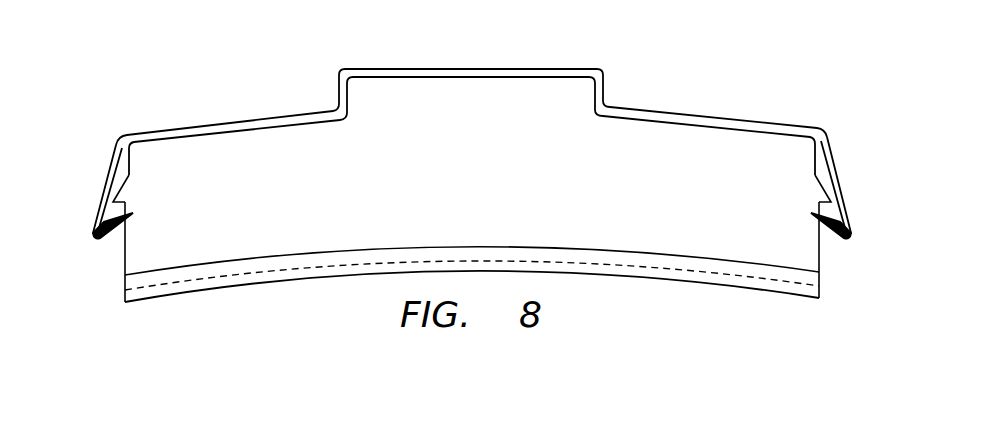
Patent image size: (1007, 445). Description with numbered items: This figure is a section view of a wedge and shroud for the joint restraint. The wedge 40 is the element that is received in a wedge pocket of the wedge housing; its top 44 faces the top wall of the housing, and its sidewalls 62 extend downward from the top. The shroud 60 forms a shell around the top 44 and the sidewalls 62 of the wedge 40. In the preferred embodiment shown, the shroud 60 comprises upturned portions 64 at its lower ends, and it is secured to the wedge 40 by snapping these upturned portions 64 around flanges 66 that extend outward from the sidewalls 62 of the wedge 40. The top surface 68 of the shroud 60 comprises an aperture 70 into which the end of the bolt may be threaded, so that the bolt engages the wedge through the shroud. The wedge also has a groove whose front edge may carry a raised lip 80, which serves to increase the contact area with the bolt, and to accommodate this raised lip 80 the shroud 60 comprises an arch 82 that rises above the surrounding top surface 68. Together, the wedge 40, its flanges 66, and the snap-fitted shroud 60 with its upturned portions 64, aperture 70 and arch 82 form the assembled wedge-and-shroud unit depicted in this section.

The wedge 40 is at (702, 240).
The top of the wedge 44 is at (167, 130).
The shroud 60 is at (765, 123).
The sidewalls of the wedge 62 is at (124, 265).
The upturned portions 64 is at (98, 239).
The flanges 66 is at (125, 192).
The top surface of the shroud 68 is at (713, 113).
The aperture 70 is at (472, 68).
The raised lip 80 is at (530, 103).
The arch 82 is at (603, 90).